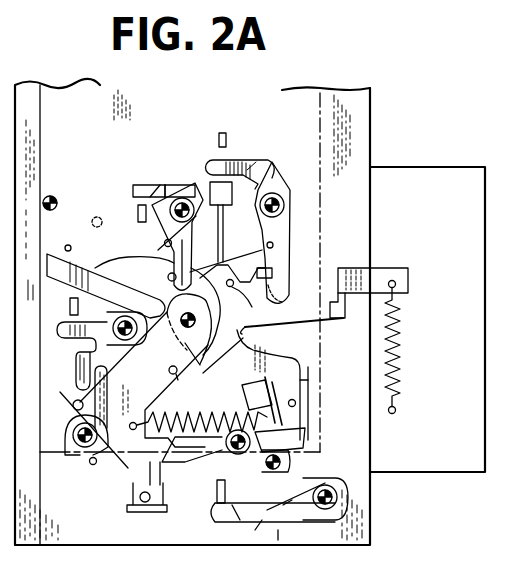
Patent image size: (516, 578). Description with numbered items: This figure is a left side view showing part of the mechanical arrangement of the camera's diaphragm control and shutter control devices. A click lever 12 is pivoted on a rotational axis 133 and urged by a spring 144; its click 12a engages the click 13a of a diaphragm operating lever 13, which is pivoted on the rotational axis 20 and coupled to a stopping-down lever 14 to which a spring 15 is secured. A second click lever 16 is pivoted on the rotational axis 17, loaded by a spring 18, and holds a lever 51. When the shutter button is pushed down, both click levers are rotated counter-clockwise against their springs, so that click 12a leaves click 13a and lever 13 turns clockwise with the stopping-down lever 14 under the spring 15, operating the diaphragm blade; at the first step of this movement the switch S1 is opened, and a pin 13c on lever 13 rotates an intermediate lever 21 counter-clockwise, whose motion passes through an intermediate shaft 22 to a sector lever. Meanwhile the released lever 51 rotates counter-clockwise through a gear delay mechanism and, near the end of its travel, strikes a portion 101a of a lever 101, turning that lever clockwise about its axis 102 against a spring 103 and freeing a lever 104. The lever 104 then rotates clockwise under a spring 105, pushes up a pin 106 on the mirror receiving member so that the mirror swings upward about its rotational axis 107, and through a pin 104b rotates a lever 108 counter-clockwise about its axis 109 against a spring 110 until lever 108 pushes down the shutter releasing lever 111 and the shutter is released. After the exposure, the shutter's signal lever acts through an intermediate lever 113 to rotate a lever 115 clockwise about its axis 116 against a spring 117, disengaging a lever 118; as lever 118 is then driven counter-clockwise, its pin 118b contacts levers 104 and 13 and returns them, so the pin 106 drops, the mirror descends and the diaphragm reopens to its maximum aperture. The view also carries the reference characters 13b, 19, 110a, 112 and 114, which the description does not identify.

The click lever 12 is at (238, 160).
The click 12a is at (279, 280).
The diaphragm operating lever 13 is at (330, 322).
The click 13a is at (280, 260).
The link portion 13b is at (243, 315).
The pin 13c is at (308, 384).
The stopping-down lever 14 is at (383, 267).
The spring 15 is at (400, 346).
The click lever 16 is at (255, 530).
The rotational axis 17 is at (350, 495).
The spring 18 is at (278, 541).
The bar 19 is at (262, 401).
The rotational axis 20 is at (200, 340).
The intermediate lever 21 is at (297, 409).
The intermediate shaft 22 is at (290, 460).
The lever 51 is at (283, 505).
The lever 101 is at (218, 482).
The portion 101a is at (245, 525).
The axis 102 is at (240, 452).
The spring 103 is at (304, 440).
The lever 104 is at (273, 363).
The pin 104b is at (158, 262).
The spring 105 is at (230, 428).
The pin 106 is at (70, 245).
The rotational axis 107 is at (52, 196).
The lever 108 is at (131, 185).
The axis 109 is at (187, 197).
The spring 110 is at (170, 184).
The stop 110a is at (221, 132).
The shutter releasing lever 111 is at (137, 210).
The stop 112 is at (70, 303).
The intermediate lever 113 is at (60, 326).
The pivot 114 is at (115, 320).
The lever 115 is at (95, 460).
The axis 116 is at (215, 508).
The spring 117 is at (73, 408).
The lever 118 is at (162, 386).
The pin 118b is at (176, 375).
The rotational axis 133 is at (285, 190).
The spring 144 is at (259, 186).
The switch S1 is at (232, 200).